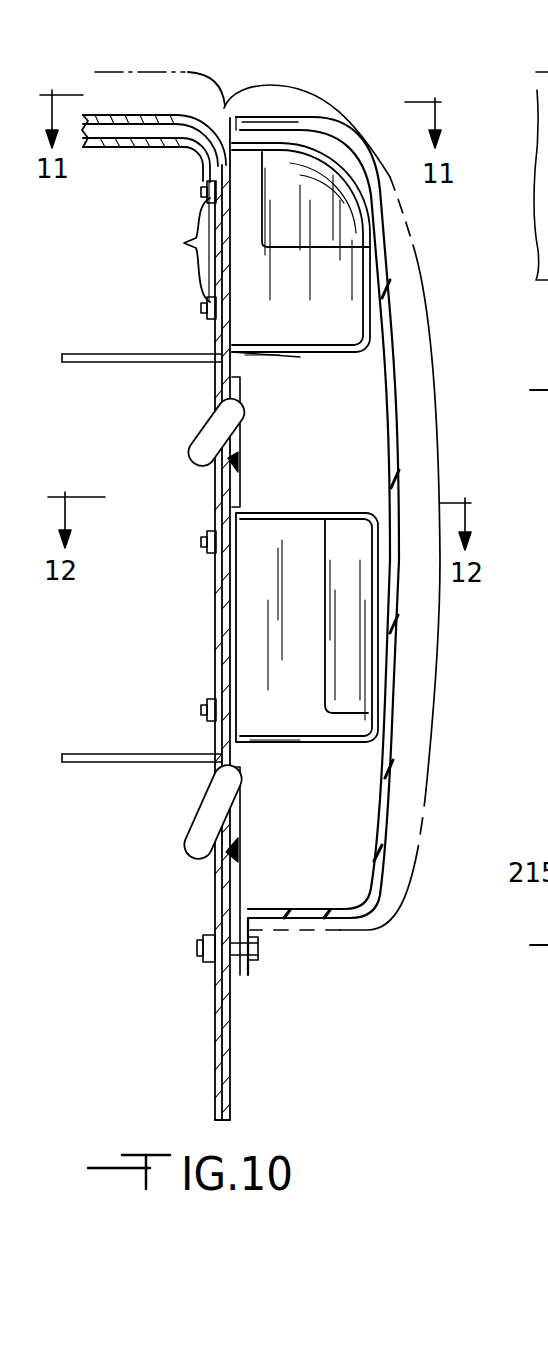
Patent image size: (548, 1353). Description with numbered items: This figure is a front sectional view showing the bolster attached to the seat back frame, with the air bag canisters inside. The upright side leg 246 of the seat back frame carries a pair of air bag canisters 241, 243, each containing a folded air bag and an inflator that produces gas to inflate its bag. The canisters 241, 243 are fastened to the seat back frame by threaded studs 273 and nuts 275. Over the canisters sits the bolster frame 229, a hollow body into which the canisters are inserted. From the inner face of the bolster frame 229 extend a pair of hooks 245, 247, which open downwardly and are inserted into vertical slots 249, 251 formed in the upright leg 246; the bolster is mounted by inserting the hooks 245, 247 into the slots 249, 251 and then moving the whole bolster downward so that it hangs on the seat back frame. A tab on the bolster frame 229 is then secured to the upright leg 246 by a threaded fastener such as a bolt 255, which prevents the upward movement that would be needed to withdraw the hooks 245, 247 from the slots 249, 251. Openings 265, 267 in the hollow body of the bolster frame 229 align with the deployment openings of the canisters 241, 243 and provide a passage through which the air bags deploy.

The bolster frame 229 is at (395, 348).
The air bag canister 241 is at (283, 513).
The air bag canister 243 is at (283, 354).
The hook 245 is at (196, 836).
The upright side leg 246 is at (213, 1062).
The hook 247 is at (200, 438).
The vertical slot 249 is at (232, 785).
The vertical slot 251 is at (232, 392).
The bolt 255 is at (258, 965).
The opening 265 is at (398, 636).
The opening 267 is at (340, 140).
The threaded stud 273 is at (166, 242).
The nut 275 is at (203, 186).